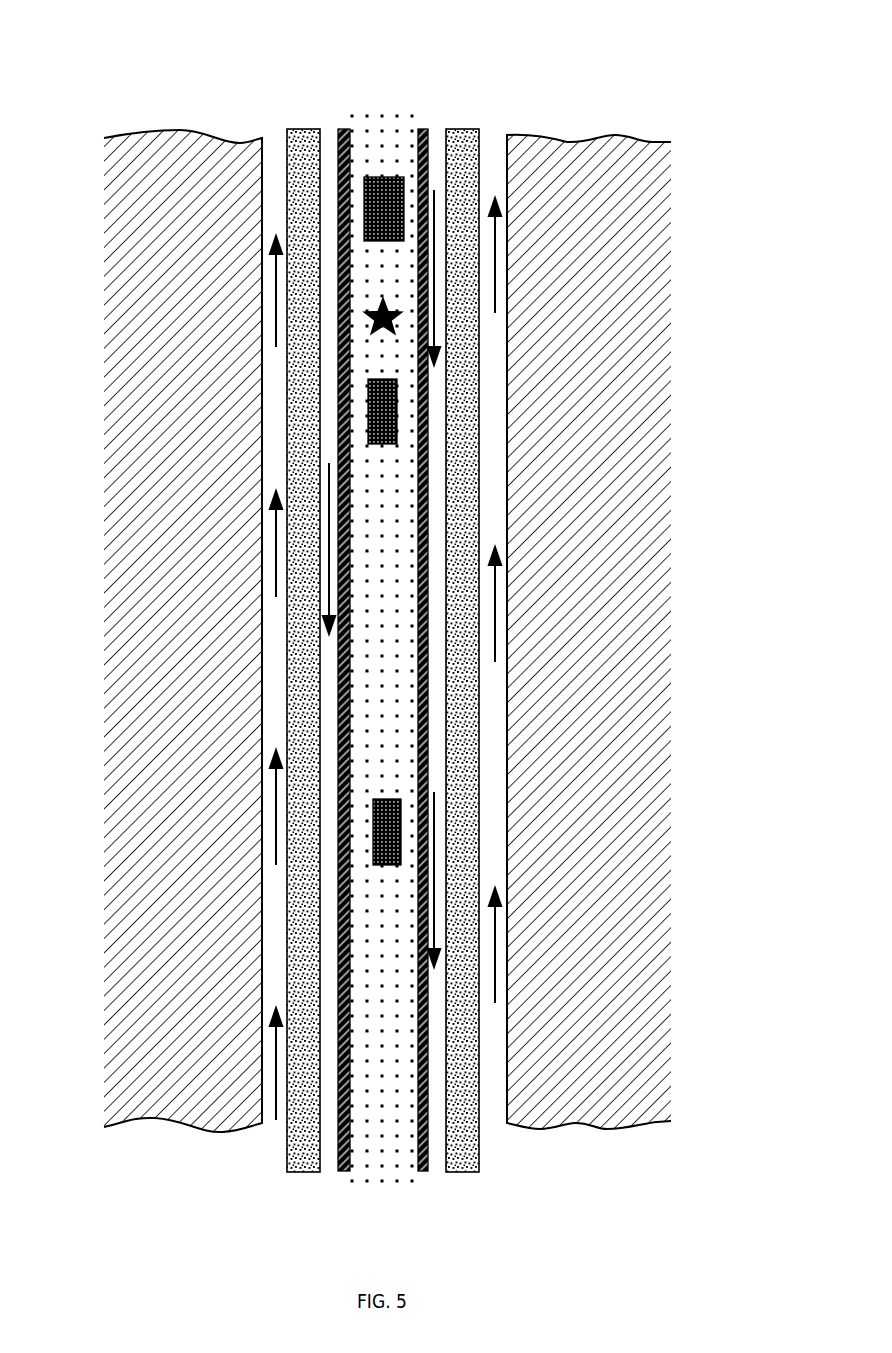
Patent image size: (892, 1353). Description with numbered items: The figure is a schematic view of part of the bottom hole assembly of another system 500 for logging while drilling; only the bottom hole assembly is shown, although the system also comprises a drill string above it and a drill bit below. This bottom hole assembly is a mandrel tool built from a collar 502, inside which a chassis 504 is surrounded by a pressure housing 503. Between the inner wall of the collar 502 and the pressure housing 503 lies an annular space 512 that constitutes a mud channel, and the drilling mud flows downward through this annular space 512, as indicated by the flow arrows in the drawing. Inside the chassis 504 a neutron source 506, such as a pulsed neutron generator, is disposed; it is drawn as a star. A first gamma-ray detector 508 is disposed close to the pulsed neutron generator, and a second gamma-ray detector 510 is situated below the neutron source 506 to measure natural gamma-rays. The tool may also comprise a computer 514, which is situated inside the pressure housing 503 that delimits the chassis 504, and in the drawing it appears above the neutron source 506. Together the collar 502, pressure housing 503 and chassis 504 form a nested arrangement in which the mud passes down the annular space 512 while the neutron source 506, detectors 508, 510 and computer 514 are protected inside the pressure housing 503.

The system for logging while drilling 500 is at (580, 54).
The collar 502 is at (467, 1161).
The pressure housing 503 is at (426, 1173).
The chassis 504 is at (381, 1168).
The neutron source 506 is at (373, 312).
The first gamma-ray detector 508 is at (380, 416).
The second gamma-ray detector 510 is at (375, 835).
The annular space 512 is at (437, 679).
The computer 514 is at (385, 177).